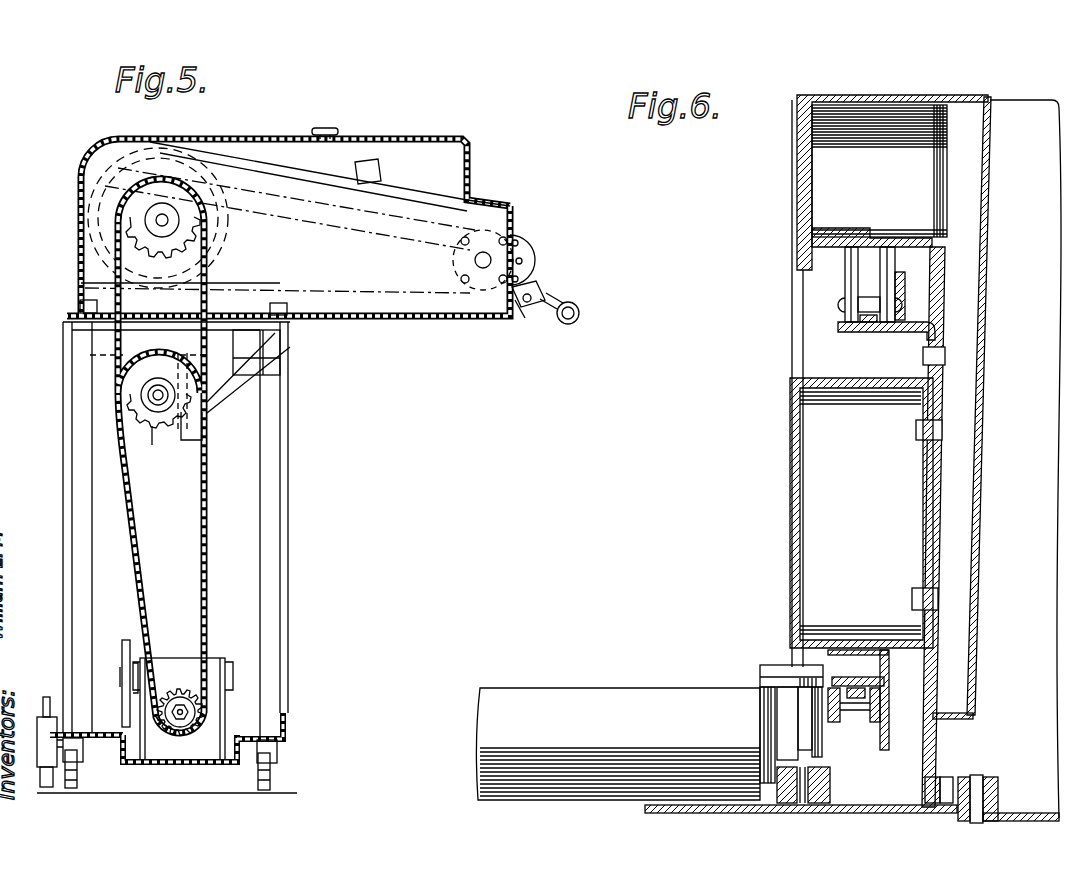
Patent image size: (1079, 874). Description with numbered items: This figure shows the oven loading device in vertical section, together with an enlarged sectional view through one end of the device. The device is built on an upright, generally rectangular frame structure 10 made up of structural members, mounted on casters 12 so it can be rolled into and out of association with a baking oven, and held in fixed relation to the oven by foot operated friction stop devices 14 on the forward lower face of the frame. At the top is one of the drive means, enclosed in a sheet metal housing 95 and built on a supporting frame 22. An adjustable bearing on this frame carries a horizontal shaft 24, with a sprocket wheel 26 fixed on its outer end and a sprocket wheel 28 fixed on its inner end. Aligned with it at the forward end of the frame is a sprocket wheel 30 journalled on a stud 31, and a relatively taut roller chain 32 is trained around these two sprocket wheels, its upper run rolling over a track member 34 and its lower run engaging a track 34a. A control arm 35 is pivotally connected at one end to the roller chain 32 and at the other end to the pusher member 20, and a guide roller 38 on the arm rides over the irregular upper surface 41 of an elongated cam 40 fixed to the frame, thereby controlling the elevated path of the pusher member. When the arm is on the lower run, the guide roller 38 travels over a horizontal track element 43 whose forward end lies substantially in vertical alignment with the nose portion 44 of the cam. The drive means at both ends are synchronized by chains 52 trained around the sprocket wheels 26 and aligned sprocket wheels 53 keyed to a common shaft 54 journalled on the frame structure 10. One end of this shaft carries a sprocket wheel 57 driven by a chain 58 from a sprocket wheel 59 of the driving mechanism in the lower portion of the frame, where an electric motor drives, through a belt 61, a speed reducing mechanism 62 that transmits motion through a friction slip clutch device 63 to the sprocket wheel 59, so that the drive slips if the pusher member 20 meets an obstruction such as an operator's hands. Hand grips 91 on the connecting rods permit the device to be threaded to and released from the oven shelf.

In FIG. 5, the frame structure 10 is at (272, 527).
In FIG. 5, the casters 12 is at (83, 778).
In FIG. 5, the friction stop devices 14 is at (43, 718).
In FIG. 5, the pusher member 20 is at (581, 300).
In FIG. 6, the pusher member 20 is at (569, 697).
In FIG. 5, the supporting frame 22 is at (385, 220).
In FIG. 6, the supporting frame 22 is at (945, 303).
In FIG. 5, the horizontal shaft 24 is at (164, 216).
In FIG. 5, the sprocket wheel 26 is at (188, 233).
In FIG. 5, the sprocket wheel 28 is at (222, 205).
In FIG. 5, the sprocket wheel 30 is at (455, 248).
In FIG. 5, the stud 31 is at (475, 262).
In FIG. 5, the roller chain 32 is at (338, 196).
In FIG. 6, the roller chain 32 is at (845, 303).
In FIG. 6, the track member 34 is at (870, 332).
In FIG. 6, the track 34a is at (862, 672).
In FIG. 5, the control arm 35 is at (532, 289).
In FIG. 6, the control arm 35 is at (762, 675).
In FIG. 5, the guide roller 38 is at (528, 320).
In FIG. 6, the guide roller 38 is at (786, 708).
In FIG. 6, the cam 40 is at (790, 588).
In FIG. 6, the upper surface of cam 41 is at (795, 372).
In FIG. 6, the track element 43 is at (833, 783).
In FIG. 6, the nose portion 44 is at (690, 816).
In FIG. 5, the chain 52 is at (81, 283).
In FIG. 5, the sprocket wheel 53 is at (130, 408).
In FIG. 5, the shaft 54 is at (150, 395).
In FIG. 5, the sprocket wheel 57 is at (152, 448).
In FIG. 5, the chain 58 is at (140, 540).
In FIG. 5, the sprocket wheel 59 is at (167, 685).
In FIG. 5, the belt 61 is at (126, 640).
In FIG. 5, the speed reducing mechanism 62 is at (218, 675).
In FIG. 5, the friction slip clutch device 63 is at (194, 715).
In FIG. 5, the hand grips 91 is at (325, 128).
In FIG. 5, the sheet metal housing 95 is at (100, 146).
In FIG. 6, the sheet metal housing 95 is at (1020, 112).